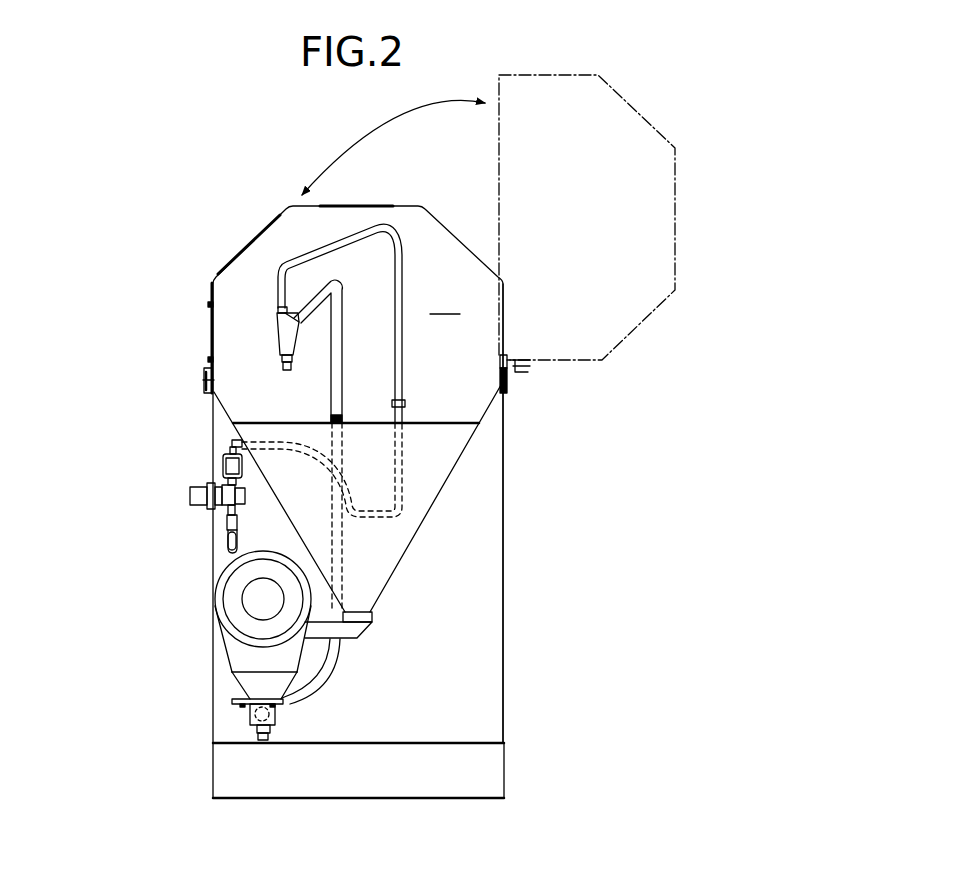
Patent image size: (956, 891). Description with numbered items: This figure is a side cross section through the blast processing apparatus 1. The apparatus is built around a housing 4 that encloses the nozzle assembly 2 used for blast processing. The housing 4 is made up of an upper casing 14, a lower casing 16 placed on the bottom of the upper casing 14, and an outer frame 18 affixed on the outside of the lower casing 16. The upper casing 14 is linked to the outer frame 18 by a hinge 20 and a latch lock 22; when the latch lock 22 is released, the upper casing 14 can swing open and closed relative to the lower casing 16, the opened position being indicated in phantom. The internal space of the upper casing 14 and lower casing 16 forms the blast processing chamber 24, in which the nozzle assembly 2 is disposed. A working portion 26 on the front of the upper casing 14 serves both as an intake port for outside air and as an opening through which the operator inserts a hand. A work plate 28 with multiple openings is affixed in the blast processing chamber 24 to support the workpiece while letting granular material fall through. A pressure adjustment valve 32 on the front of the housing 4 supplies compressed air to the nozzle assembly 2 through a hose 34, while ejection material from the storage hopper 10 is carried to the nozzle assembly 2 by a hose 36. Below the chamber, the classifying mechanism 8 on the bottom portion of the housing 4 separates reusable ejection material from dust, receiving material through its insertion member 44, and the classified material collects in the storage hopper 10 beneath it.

The blast processing apparatus 1 is at (160, 250).
The nozzle assembly 2 is at (281, 348).
The housing 4 is at (508, 562).
The classifying mechanism 8 is at (230, 659).
The storage hopper 10 is at (273, 713).
The upper casing 14 is at (458, 242).
The lower casing 16 is at (442, 496).
The outer frame 18 is at (507, 470).
The hinge 20 is at (509, 378).
The latch lock 22 is at (208, 383).
The blast processing chamber 24 is at (445, 303).
The working portion 26 is at (210, 328).
The work plate 28 is at (419, 420).
The pressure adjustment valve 32 is at (196, 487).
The hose 34 is at (403, 368).
The hose 36 is at (337, 350).
The insertion member 44 is at (355, 628).